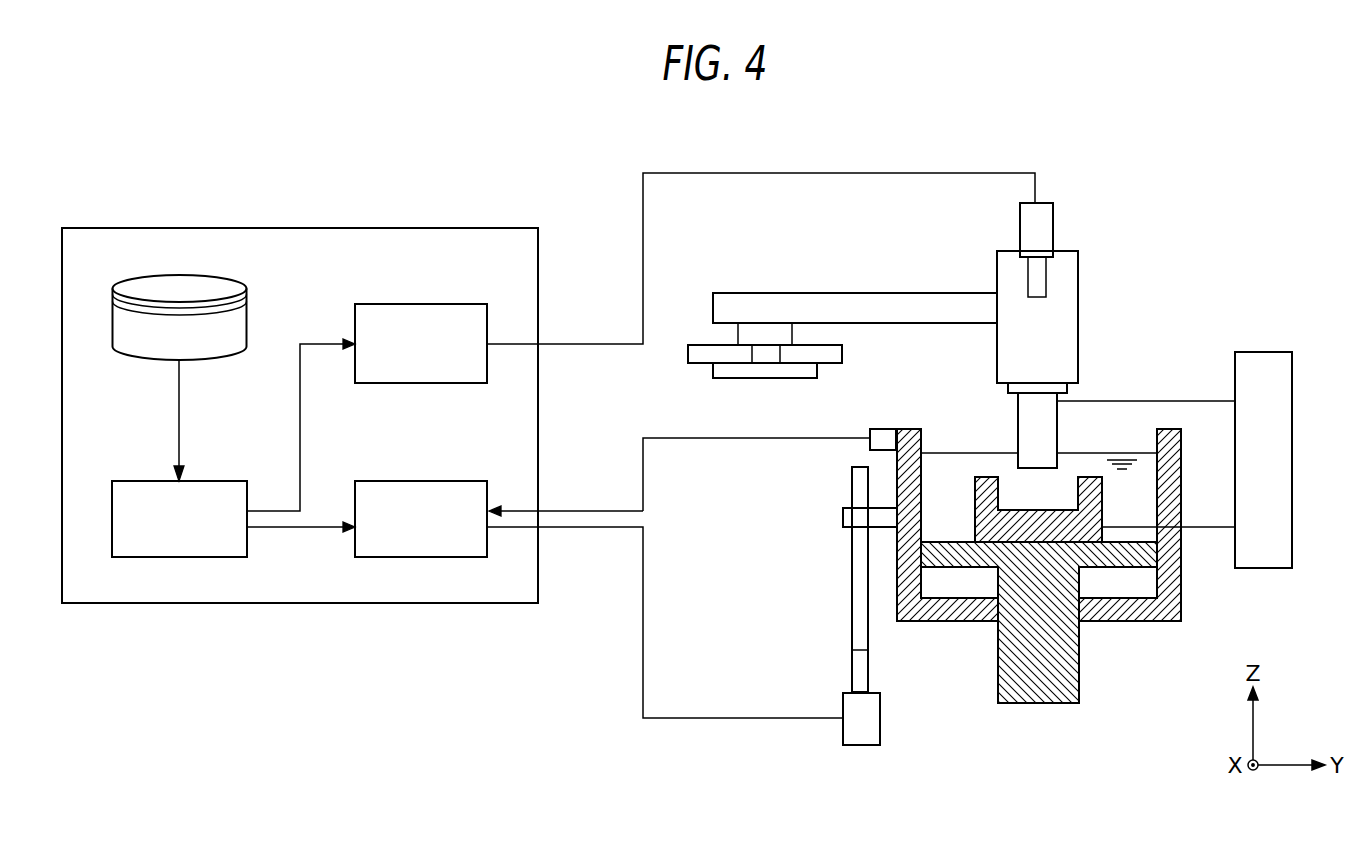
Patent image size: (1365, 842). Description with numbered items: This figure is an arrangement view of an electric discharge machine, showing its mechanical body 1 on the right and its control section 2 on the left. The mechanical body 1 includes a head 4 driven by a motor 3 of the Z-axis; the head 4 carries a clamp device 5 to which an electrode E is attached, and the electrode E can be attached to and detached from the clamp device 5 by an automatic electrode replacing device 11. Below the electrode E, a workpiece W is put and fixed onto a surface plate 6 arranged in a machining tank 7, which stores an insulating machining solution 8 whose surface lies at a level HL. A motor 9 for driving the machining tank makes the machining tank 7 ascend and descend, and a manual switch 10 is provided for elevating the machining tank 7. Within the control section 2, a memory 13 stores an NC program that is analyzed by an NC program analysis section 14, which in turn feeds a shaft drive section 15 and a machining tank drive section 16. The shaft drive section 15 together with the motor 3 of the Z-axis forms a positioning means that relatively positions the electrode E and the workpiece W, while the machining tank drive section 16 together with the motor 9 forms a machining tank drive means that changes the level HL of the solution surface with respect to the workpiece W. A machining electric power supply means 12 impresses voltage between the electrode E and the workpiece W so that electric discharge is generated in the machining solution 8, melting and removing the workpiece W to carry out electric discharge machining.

The mechanical body 1 is at (1132, 255).
The control section 2 is at (312, 228).
The motor of Z-axis 3 is at (1047, 228).
The head 4 is at (1070, 310).
The clamp device 5 is at (1068, 388).
The surface plate 6 is at (1157, 562).
The machining tank 7 is at (1163, 612).
The insulating machining solution 8 is at (1120, 451).
The motor for driving the machining tank 9 is at (870, 716).
The manual switch for elevating the machining tank 10 is at (885, 428).
The automatic electrode replacing device 11 is at (700, 347).
The machining electric power supply means 12 is at (1278, 460).
The memory 13 is at (230, 278).
The NC program analysis section 14 is at (212, 481).
The shaft drive section 15 is at (420, 304).
The machining tank drive section 16 is at (425, 481).
The electrode E is at (1058, 424).
The workpiece W is at (985, 477).
The level of a surface of the machining solution HL is at (942, 453).